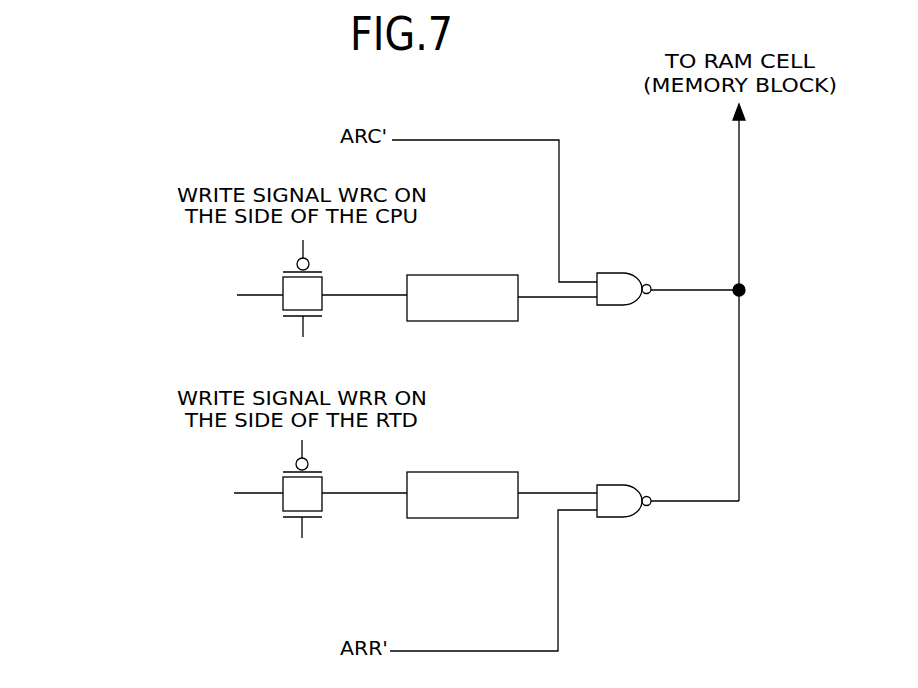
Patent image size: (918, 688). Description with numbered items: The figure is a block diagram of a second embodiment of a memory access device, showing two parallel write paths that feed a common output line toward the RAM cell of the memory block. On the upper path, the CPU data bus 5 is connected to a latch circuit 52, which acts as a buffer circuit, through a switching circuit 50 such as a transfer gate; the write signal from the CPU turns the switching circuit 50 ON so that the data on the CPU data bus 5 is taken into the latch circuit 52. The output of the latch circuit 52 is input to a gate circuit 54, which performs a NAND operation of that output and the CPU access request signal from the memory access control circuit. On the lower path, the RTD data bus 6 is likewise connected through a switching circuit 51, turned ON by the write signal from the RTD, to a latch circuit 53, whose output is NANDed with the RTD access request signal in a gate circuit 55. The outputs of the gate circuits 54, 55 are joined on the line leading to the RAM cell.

The CPU data bus 5 is at (259, 297).
The RTD data bus 6 is at (258, 495).
The switching circuit 50 is at (324, 308).
The switching circuit 51 is at (324, 509).
The latch circuit 52 is at (470, 275).
The latch circuit 53 is at (470, 472).
The gate circuit 54 is at (618, 273).
The gate circuit 55 is at (618, 485).